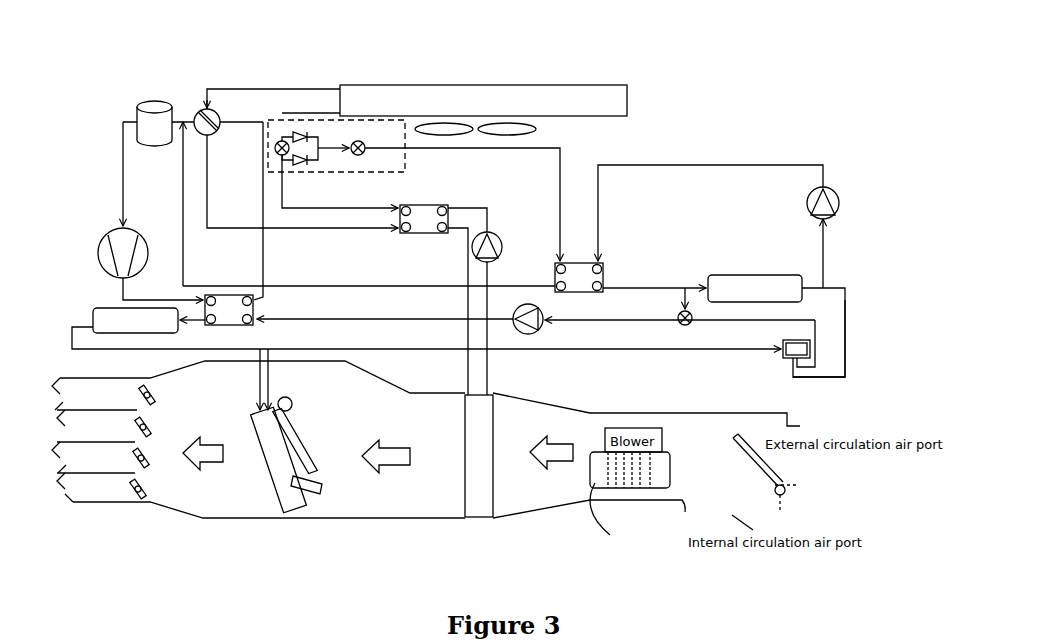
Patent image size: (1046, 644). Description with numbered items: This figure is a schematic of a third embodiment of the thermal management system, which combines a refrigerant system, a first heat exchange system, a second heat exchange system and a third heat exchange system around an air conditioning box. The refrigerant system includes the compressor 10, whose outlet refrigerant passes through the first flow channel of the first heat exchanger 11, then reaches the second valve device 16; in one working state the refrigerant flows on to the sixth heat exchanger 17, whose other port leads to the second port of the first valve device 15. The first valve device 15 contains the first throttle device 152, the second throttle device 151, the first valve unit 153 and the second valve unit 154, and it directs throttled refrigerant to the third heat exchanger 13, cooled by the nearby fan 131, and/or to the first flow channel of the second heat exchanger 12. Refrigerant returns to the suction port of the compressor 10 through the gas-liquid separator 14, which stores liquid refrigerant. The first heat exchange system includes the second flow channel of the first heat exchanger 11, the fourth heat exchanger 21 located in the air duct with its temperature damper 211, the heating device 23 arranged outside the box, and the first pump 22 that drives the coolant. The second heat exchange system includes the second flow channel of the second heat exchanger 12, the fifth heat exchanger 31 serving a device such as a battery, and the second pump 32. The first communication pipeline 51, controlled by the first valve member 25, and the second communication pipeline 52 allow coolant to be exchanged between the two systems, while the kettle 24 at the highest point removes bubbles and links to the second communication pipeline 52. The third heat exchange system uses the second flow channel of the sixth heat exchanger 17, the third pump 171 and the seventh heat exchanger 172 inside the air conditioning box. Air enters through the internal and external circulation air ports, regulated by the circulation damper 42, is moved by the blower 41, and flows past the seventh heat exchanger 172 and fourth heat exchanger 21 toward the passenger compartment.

The compressor 10 is at (99, 256).
The first heat exchanger 11 is at (255, 305).
The second heat exchanger 12 is at (603, 276).
The third heat exchanger 13 is at (627, 103).
The fan 131 is at (538, 127).
The gas-liquid separator 14 is at (147, 102).
The first valve device 15 is at (405, 150).
The second throttle device 151 is at (357, 156).
The first throttle device 152 is at (278, 140).
The first valve unit 153 is at (312, 131).
The second valve unit 154 is at (300, 168).
The second valve device 16 is at (200, 109).
The sixth heat exchanger 17 is at (400, 233).
The third pump 171 is at (500, 232).
The seventh heat exchanger 172 is at (480, 412).
The fourth heat exchanger 21 is at (322, 483).
The temperature damper 211 is at (310, 423).
The first pump 22 is at (543, 333).
The heating device 23 is at (100, 312).
The kettle 24 is at (784, 358).
The first valve member 25 is at (678, 312).
The fifth heat exchanger 31 is at (735, 272).
The second pump 32 is at (806, 203).
The blower 41 is at (613, 514).
The circulation damper 42 is at (765, 462).
The first communication pipeline 51 is at (683, 300).
The second communication pipeline 52 is at (845, 378).